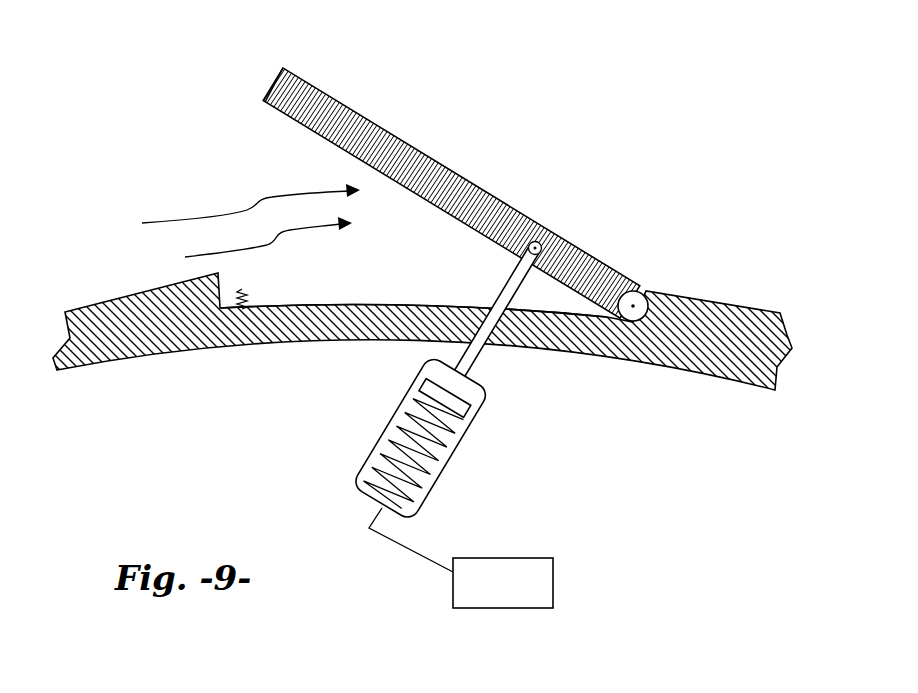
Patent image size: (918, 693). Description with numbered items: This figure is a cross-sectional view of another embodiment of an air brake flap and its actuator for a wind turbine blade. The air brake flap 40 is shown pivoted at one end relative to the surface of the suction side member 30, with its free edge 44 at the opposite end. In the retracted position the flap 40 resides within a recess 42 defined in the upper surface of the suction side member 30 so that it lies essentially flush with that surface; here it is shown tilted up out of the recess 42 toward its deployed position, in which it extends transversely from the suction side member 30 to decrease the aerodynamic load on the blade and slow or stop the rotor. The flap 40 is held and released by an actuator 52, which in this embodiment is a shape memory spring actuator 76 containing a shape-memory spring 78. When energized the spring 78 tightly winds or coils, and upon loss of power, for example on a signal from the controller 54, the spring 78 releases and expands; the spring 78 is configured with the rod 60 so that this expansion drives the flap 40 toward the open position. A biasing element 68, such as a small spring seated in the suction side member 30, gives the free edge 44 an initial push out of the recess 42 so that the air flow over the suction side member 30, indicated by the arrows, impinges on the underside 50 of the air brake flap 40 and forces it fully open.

The suction side member 30 is at (92, 303).
The air brake flap 40 is at (468, 187).
The recess 42 is at (382, 305).
The free edge 44 is at (263, 90).
The underside 50 is at (251, 214).
The actuator 52 is at (462, 391).
The controller 54 is at (503, 608).
The rod 60 is at (497, 283).
The biasing element 68 is at (247, 291).
The shape memory spring actuator 76 is at (478, 500).
The shape-memory spring 78 is at (386, 427).